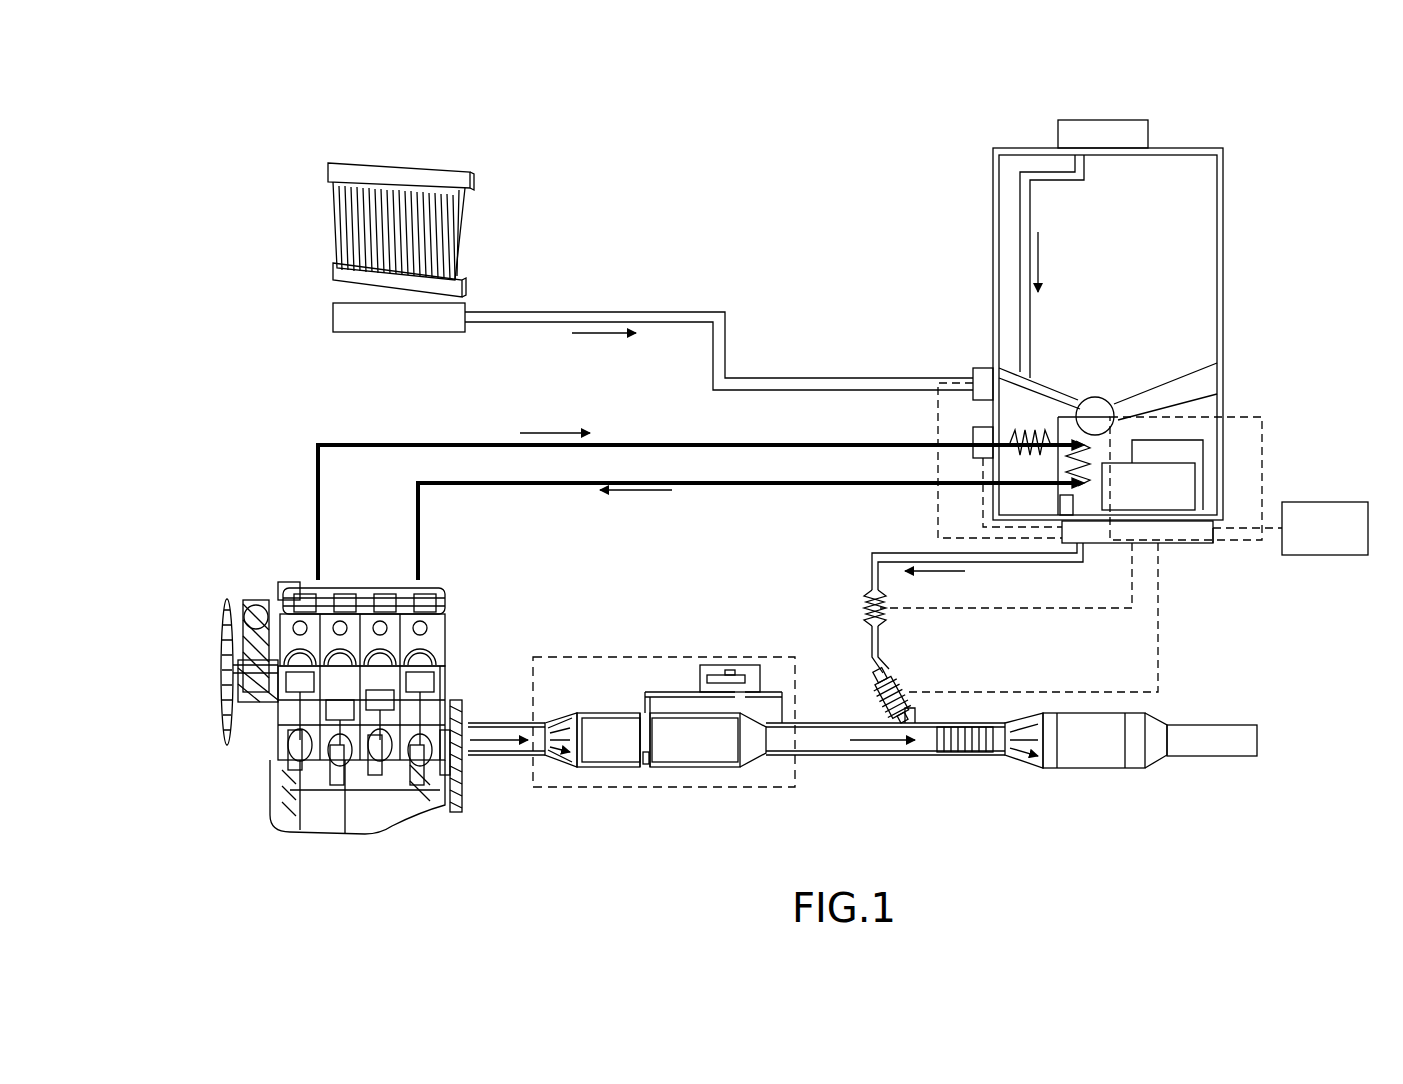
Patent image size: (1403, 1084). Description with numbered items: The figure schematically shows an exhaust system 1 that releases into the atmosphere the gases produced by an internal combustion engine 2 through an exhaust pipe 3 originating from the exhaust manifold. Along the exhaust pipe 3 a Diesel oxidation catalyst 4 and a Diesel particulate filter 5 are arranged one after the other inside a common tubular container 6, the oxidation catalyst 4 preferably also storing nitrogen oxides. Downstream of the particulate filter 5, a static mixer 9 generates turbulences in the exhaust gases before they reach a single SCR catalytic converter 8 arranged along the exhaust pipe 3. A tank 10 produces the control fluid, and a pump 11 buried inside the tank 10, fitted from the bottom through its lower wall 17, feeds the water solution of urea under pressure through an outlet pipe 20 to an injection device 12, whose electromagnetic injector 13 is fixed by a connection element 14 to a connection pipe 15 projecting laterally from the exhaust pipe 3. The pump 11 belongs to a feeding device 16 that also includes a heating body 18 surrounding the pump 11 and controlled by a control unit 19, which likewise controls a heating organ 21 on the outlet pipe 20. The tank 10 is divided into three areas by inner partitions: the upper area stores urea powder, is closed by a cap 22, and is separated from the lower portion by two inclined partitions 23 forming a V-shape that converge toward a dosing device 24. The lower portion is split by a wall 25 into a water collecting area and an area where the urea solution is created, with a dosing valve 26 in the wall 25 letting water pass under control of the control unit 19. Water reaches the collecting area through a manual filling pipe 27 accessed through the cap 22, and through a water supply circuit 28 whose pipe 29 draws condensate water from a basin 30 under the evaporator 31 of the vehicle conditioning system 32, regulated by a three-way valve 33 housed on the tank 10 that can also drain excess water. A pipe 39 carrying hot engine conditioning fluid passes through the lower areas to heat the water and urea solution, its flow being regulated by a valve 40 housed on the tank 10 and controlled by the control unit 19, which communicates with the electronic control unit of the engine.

The exhaust system 1 is at (857, 748).
The internal combustion engine 2 is at (200, 798).
The exhaust pipe 3 is at (485, 760).
The Diesel oxidation catalyst 4 is at (610, 767).
The Diesel particulate filter 5 is at (700, 767).
The common tubular container 6 is at (664, 768).
The SCR catalytic converter 8 is at (1095, 768).
The static mixer 9 is at (965, 756).
The tank 10 is at (1245, 143).
The pump 11 is at (1195, 455).
The injection device 12 is at (860, 690).
The electromagnetic injector 13 is at (915, 712).
The reducing agent injector 14 is at (900, 682).
The connection pipe 15 is at (905, 756).
The feeding device 16 is at (1242, 392).
The lower wall 17 is at (1200, 527).
The heating body 18 is at (1168, 502).
The control unit 19 is at (1132, 535).
The outlet pipe 20 is at (872, 553).
The heating organ 21 is at (870, 596).
The cap 22 is at (1118, 125).
The partitions 23 is at (1000, 367).
The dosing device 24 is at (1100, 395).
The wall 25 is at (1045, 425).
The dosing valve 26 is at (1068, 503).
The pipe 27 is at (1017, 226).
The water supply circuit 28 is at (558, 330).
The pipe 29 is at (735, 378).
The basin 30 is at (333, 318).
The evaporator 31 is at (455, 222).
The conditioning system 32 is at (401, 214).
The three-way valve 33 is at (975, 370).
The pipe 39 is at (355, 440).
The valve 40 is at (975, 432).